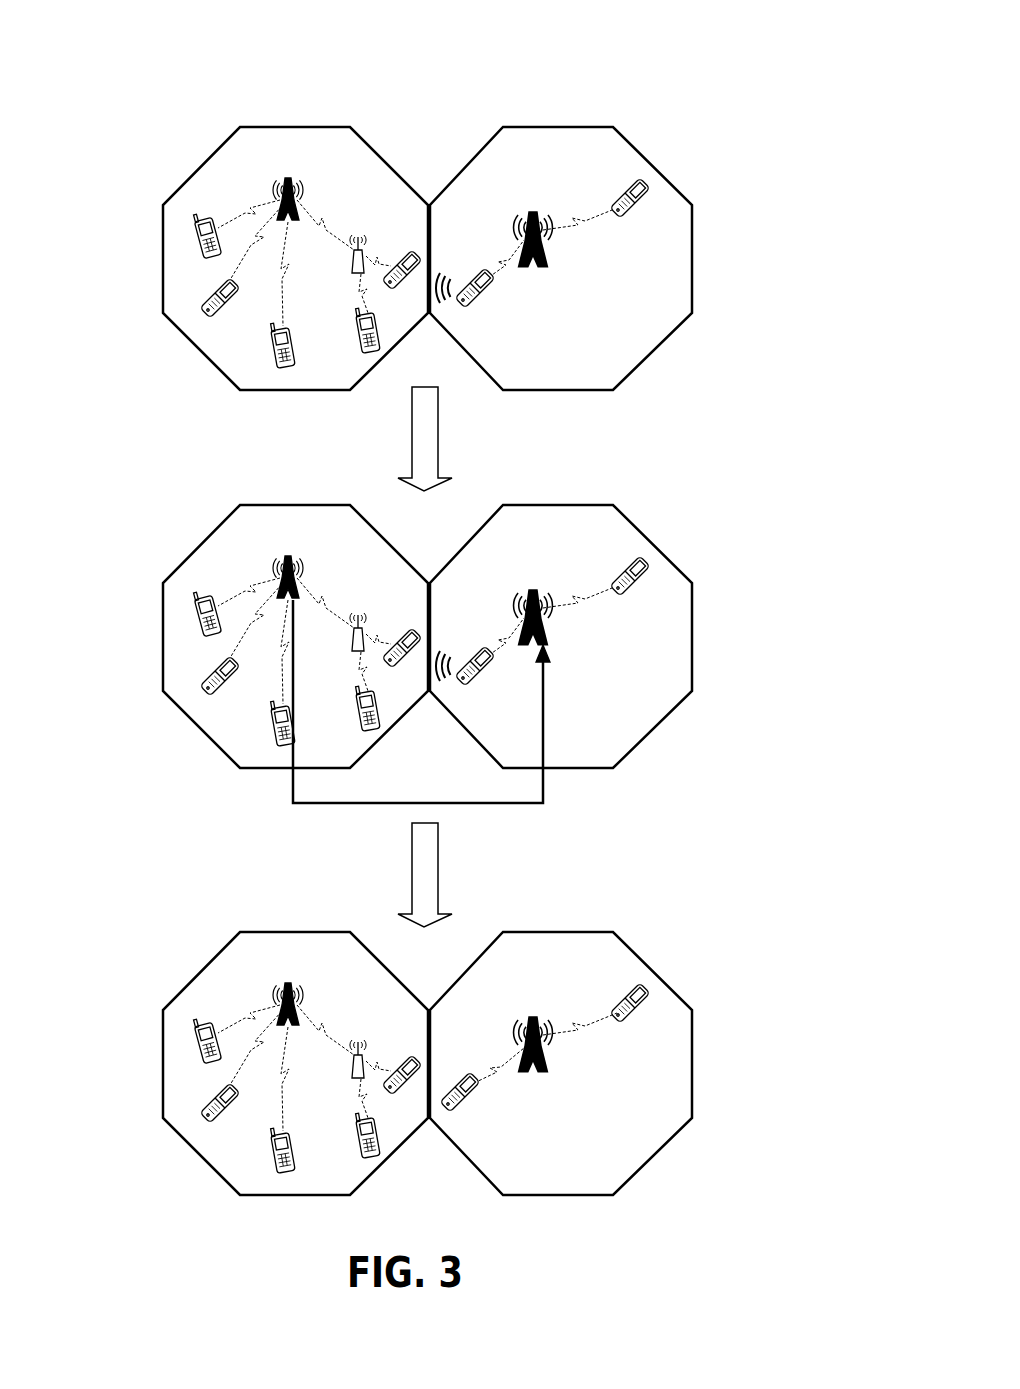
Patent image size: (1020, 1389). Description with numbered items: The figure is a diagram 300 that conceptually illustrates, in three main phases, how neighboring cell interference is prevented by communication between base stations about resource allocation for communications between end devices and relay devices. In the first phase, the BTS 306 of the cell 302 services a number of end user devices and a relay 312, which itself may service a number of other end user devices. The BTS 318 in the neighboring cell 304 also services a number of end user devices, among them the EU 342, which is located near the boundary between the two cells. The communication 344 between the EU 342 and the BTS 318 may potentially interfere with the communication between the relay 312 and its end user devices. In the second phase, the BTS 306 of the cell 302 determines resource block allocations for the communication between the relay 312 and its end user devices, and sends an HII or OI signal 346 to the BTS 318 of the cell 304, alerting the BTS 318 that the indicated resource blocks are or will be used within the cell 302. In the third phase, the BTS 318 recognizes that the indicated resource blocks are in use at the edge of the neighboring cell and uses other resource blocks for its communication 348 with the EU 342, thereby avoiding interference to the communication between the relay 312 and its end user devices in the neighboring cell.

The diagram 300 is at (440, 600).
The cell 302 is at (162, 172).
The neighboring cell 304 is at (668, 165).
The BTS 306 is at (290, 172).
The relay 312 is at (366, 240).
The BTS 318 is at (532, 197).
The EU 342 is at (505, 292).
The communication 344 is at (443, 312).
The HII or OI signal 346 is at (515, 822).
The communication 348 is at (502, 1083).